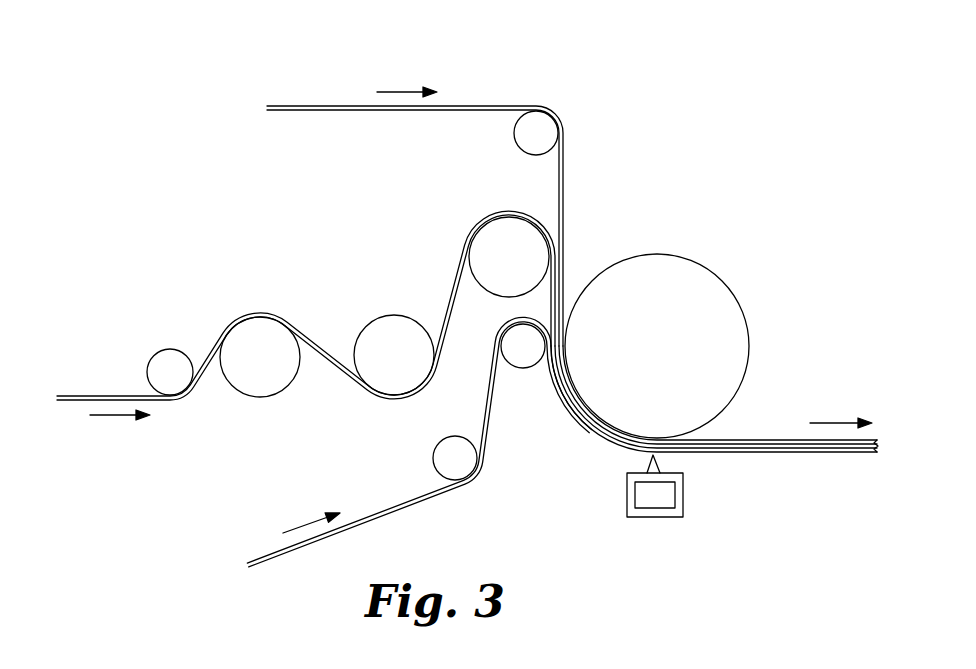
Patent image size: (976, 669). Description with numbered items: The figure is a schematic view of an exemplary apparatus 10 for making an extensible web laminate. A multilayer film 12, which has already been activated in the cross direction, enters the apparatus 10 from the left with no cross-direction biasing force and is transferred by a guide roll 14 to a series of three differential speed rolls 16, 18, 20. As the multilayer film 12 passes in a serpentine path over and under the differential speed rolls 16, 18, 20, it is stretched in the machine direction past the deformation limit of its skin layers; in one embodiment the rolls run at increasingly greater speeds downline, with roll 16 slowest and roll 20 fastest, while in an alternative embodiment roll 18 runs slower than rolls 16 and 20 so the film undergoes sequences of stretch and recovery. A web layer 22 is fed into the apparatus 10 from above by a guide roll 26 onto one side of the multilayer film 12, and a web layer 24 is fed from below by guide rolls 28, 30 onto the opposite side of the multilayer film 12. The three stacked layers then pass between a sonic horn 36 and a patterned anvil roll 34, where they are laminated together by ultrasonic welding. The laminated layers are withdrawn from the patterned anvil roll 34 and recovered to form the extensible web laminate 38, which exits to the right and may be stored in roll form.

The apparatus 10 is at (722, 99).
The multilayer film 12 is at (81, 394).
The guide roll 14 is at (162, 363).
The differential speed roll 16 is at (252, 325).
The differential speed roll 18 is at (380, 332).
The differential speed roll 20 is at (488, 240).
The web layer 22 is at (313, 105).
The web layer 24 is at (263, 553).
The guide roll 26 is at (528, 135).
The guide roll 28 is at (443, 458).
The guide roll 30 is at (523, 357).
The patterned roll 34 is at (668, 272).
The sonic horn 36 is at (657, 497).
The extensible web laminate 38 is at (765, 437).